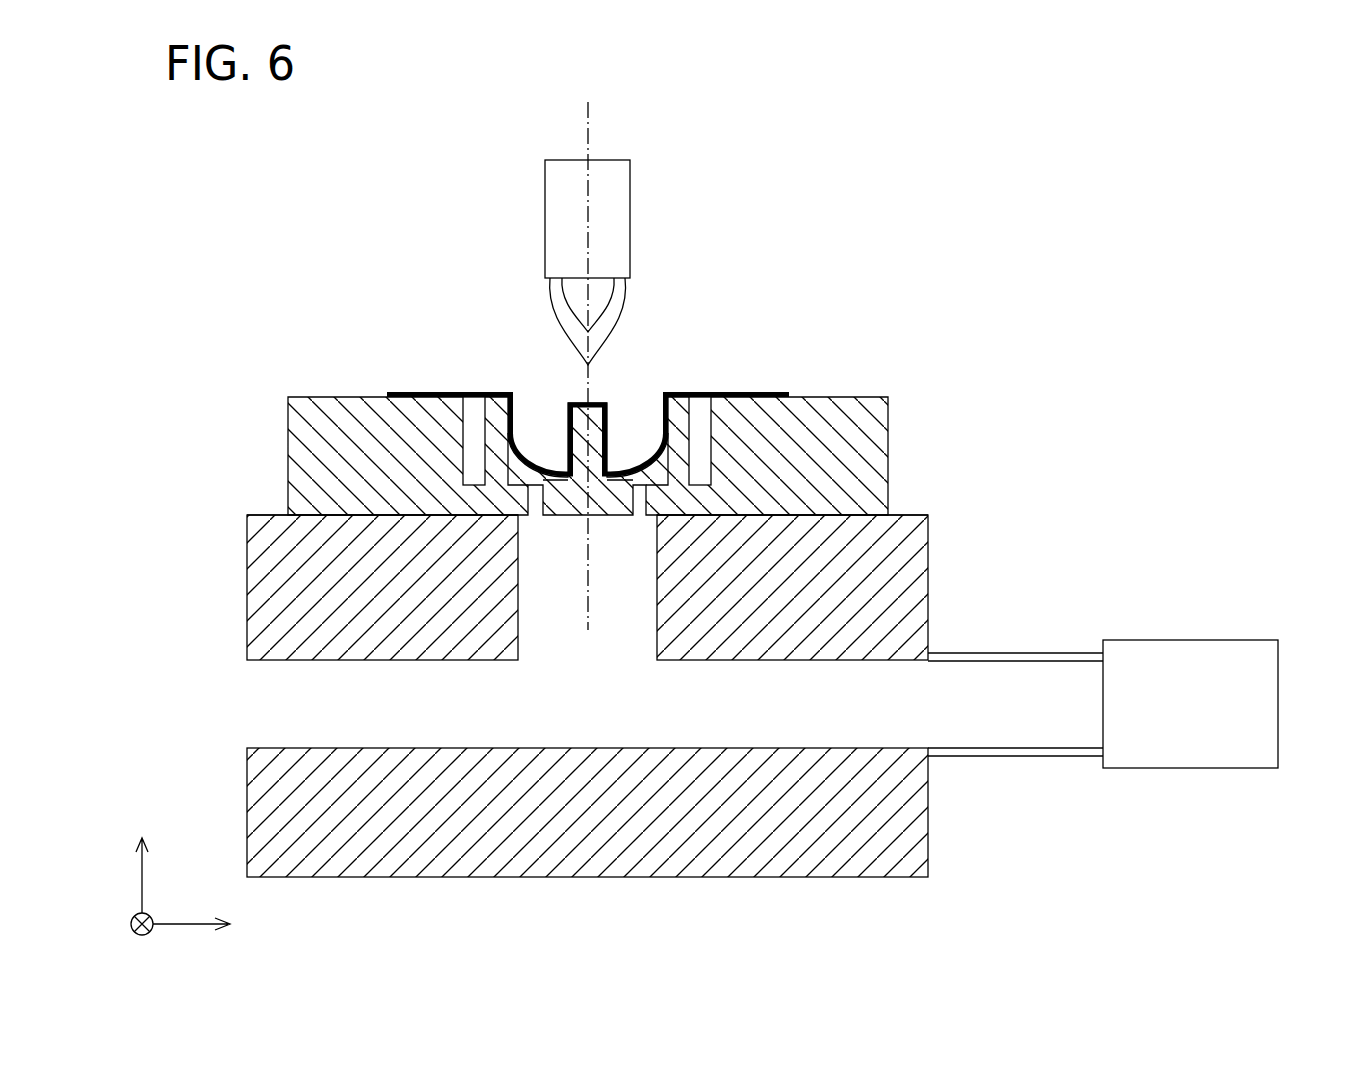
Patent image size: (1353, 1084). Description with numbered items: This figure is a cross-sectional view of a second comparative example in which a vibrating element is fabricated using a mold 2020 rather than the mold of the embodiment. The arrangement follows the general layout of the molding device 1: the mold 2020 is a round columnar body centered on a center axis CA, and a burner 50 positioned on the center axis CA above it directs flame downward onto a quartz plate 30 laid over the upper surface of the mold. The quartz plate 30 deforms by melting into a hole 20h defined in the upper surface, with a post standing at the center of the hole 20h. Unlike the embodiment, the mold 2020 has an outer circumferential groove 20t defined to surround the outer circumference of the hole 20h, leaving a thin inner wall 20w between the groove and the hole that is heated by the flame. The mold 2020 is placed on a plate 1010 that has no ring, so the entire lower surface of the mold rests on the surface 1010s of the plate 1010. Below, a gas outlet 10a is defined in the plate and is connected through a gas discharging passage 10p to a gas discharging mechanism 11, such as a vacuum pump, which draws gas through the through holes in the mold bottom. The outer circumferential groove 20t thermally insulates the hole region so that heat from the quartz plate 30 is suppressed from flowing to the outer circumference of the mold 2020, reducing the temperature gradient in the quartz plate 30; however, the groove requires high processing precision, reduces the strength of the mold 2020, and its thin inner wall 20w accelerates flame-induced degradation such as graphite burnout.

The molding device 1 is at (913, 100).
The center axis CA is at (587, 113).
The burner 50 is at (555, 191).
The mold 2020 is at (858, 420).
The outer circumferential groove 20t is at (469, 447).
The inner wall 20w is at (500, 423).
The hole 20h is at (543, 437).
The quartz plate 30 is at (393, 391).
The plate 1010 is at (903, 578).
The surface 1010s is at (903, 514).
The gas outlet 10a is at (601, 549).
The gas discharging passage 10p is at (903, 748).
The gas discharging mechanism 11 is at (1243, 660).